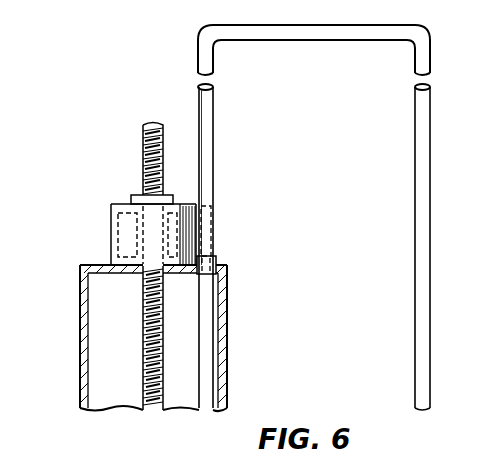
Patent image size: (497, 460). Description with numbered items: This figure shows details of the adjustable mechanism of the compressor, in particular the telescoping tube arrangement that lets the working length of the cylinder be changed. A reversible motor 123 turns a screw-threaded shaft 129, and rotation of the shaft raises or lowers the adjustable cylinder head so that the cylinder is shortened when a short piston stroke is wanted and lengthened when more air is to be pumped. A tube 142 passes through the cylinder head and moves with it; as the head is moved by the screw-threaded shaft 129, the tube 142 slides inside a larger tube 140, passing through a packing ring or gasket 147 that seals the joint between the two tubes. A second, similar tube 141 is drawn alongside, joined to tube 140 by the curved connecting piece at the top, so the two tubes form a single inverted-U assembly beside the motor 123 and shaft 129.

The reversible motor 123 is at (111, 220).
The screw-threaded shaft 129 is at (145, 344).
The larger tube 140 is at (207, 128).
The tube 141 is at (416, 175).
The tube 142 is at (215, 340).
The packing ring or gasket 147 is at (216, 257).